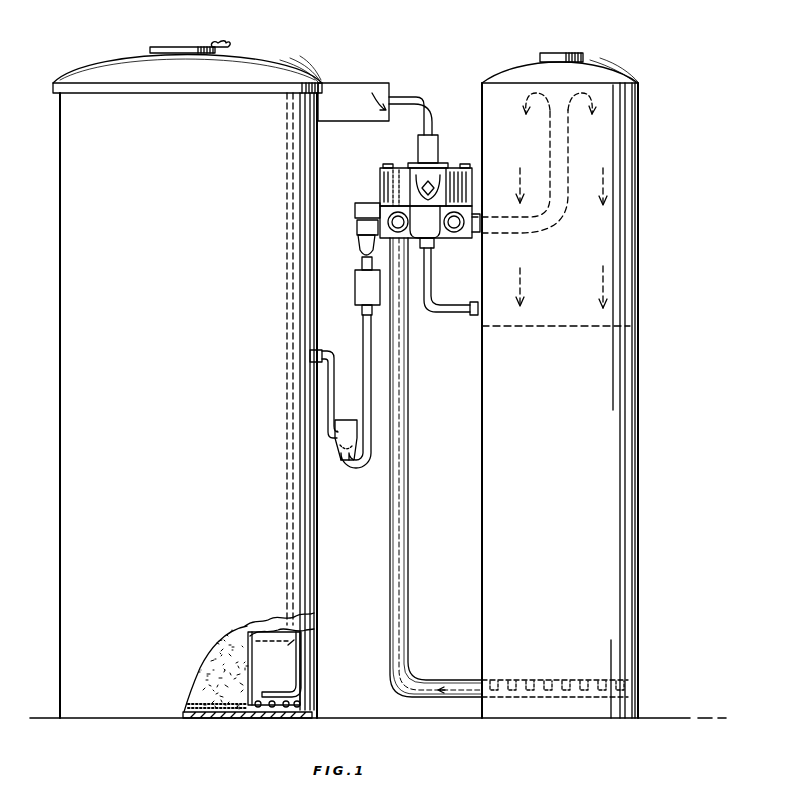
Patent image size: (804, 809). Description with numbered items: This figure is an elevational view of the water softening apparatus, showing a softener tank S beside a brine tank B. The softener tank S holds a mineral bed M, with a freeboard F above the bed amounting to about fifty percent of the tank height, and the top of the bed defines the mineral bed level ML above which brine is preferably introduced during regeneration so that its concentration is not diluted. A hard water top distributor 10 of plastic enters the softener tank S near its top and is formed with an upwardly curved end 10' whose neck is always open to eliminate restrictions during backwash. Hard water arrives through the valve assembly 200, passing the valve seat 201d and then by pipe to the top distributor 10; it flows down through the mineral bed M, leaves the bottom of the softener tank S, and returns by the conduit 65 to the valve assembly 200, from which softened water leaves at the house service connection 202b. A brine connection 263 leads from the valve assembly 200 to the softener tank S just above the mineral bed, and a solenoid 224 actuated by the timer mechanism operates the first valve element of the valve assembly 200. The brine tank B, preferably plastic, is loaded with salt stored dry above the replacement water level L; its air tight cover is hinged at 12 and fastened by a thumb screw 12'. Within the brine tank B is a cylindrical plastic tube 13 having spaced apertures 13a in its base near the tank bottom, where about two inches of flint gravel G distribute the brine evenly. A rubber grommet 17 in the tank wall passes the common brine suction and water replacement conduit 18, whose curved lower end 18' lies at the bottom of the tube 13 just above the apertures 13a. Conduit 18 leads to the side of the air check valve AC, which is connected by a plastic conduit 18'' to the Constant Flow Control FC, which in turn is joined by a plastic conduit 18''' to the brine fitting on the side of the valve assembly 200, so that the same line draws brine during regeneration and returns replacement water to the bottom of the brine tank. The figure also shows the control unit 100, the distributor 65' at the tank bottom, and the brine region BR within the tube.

The brine tank B is at (63, 272).
The hinge 12 is at (157, 44).
The thumb screw 12' is at (232, 38).
The common brine suction and water replacement conduit 18 is at (283, 359).
The control unit 100 is at (359, 98).
The solenoid 224 is at (437, 147).
The valve assembly 200 is at (458, 162).
The house service connection 202b is at (400, 210).
The valve seat 201d is at (463, 228).
The plastic conduit 18''' is at (350, 235).
The Constant Flow Control FC is at (355, 288).
The plastic conduit 18'' is at (354, 391).
The air check valve AC is at (348, 424).
The rubber grommet 17 is at (320, 351).
The brine connection 263 is at (447, 315).
The conduit 65 is at (436, 467).
The distributor 65' is at (555, 676).
The freeboard F is at (627, 220).
The mineral bed M is at (627, 412).
The softener tank S is at (606, 73).
The mineral bed level ML is at (610, 326).
The hard water top distributor 10 is at (520, 184).
The upwardly curved end 10' is at (561, 200).
The flint gravel G is at (199, 690).
The cylindrical tube 13 is at (288, 618).
The replacement water level L is at (290, 631).
The brine well BR is at (274, 668).
The curved lower end 18' is at (281, 664).
The apertures 13a is at (286, 708).